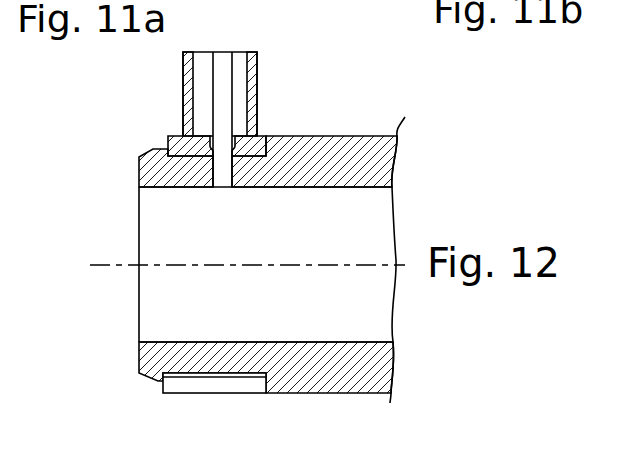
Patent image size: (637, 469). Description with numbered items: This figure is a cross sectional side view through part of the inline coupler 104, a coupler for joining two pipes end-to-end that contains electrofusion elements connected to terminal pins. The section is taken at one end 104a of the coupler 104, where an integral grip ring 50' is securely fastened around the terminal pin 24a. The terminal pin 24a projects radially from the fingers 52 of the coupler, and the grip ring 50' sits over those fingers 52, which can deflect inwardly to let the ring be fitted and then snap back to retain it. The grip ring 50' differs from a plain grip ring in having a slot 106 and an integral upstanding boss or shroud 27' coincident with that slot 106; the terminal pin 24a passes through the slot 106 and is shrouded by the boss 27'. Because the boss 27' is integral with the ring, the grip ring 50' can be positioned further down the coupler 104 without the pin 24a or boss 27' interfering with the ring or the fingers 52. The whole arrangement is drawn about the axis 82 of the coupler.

The terminal pin 24a is at (228, 52).
The upstanding boss 27' is at (251, 91).
The slot 106 is at (242, 136).
The inline coupler 104 is at (363, 130).
The end of the inline coupler 104a is at (139, 343).
The integral grip ring 50' is at (181, 268).
The fingers 52 is at (165, 188).
The axis 82 is at (381, 265).